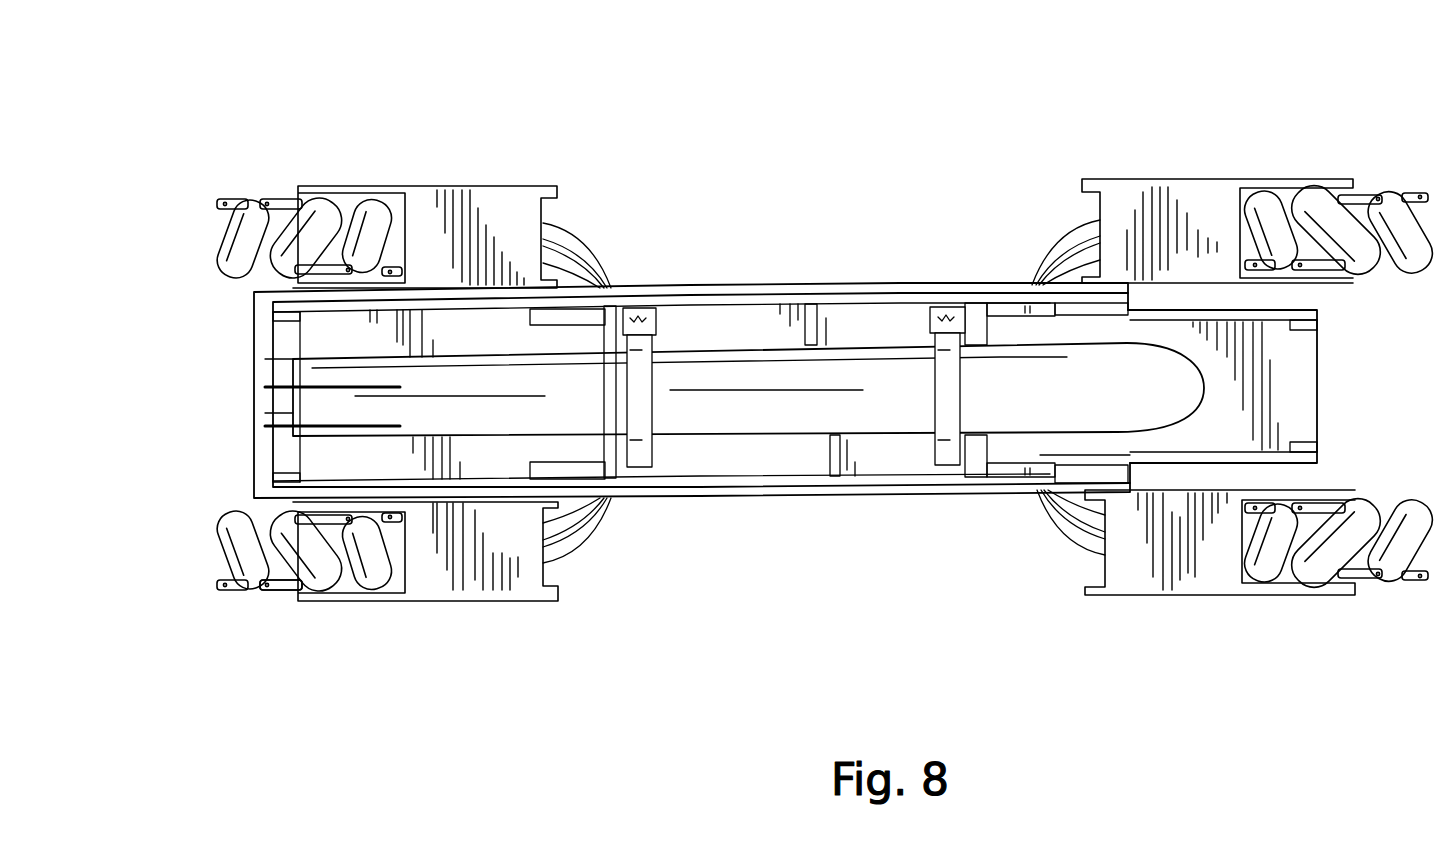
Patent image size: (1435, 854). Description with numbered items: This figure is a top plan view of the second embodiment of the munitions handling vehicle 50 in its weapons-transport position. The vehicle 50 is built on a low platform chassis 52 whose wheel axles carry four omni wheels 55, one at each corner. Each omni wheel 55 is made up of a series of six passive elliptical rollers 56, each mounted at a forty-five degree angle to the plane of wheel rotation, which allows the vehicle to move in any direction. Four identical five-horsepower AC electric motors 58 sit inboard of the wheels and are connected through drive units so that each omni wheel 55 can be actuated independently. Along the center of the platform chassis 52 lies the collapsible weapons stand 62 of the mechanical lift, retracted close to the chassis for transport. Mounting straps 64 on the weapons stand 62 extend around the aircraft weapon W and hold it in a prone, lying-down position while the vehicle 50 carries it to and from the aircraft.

The munitions handling vehicle 50 is at (640, 206).
The platform chassis 52 is at (1297, 399).
The omni wheel 55 is at (277, 592).
The passive elliptical roller 56 is at (220, 530).
The AC electric motor 58 is at (513, 575).
The collapsible weapons stand 62 is at (795, 335).
The mounting strap 64 is at (932, 398).
The aircraft weapon W is at (813, 415).